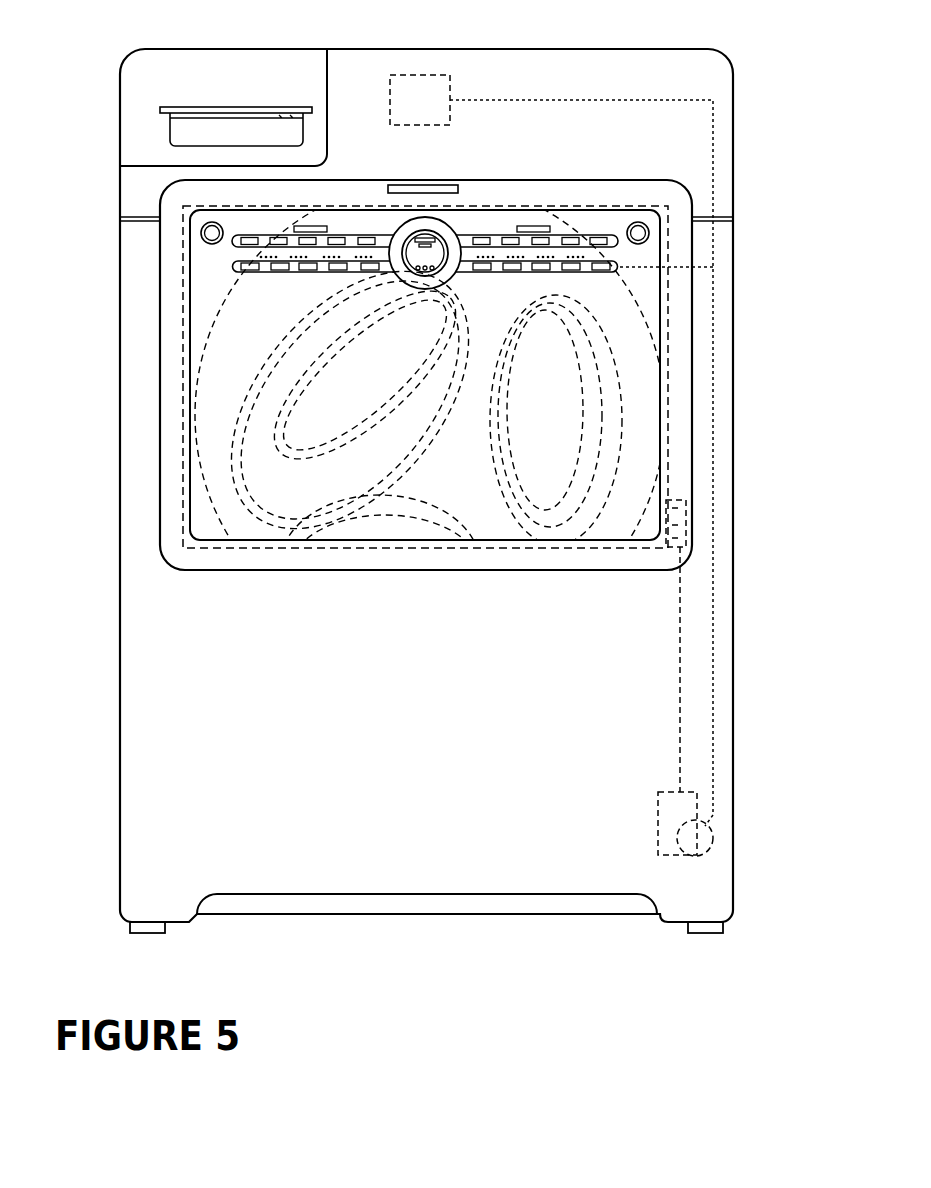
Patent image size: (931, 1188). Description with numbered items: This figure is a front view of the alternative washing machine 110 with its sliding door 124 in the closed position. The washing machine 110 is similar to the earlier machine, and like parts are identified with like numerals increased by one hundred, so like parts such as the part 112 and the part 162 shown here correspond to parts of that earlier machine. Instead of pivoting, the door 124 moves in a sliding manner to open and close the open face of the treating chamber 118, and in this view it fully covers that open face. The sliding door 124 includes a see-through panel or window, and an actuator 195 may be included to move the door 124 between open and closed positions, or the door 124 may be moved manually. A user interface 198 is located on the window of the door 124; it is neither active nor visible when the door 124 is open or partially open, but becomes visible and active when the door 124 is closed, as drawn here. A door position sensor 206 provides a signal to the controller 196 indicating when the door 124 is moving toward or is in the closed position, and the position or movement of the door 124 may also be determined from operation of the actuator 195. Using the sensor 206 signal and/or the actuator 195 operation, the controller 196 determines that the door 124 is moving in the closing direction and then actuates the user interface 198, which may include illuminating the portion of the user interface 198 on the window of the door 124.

The washing machine 110 is at (71, 54).
The cabinet 112 is at (468, 46).
The dispenser drawer 162 is at (258, 48).
The controller 196 is at (417, 74).
The user interface 198 is at (232, 266).
The door position sensor 206 is at (668, 230).
The sliding door 124 is at (215, 417).
The treating chamber 118 is at (456, 452).
The actuator 195 is at (680, 856).